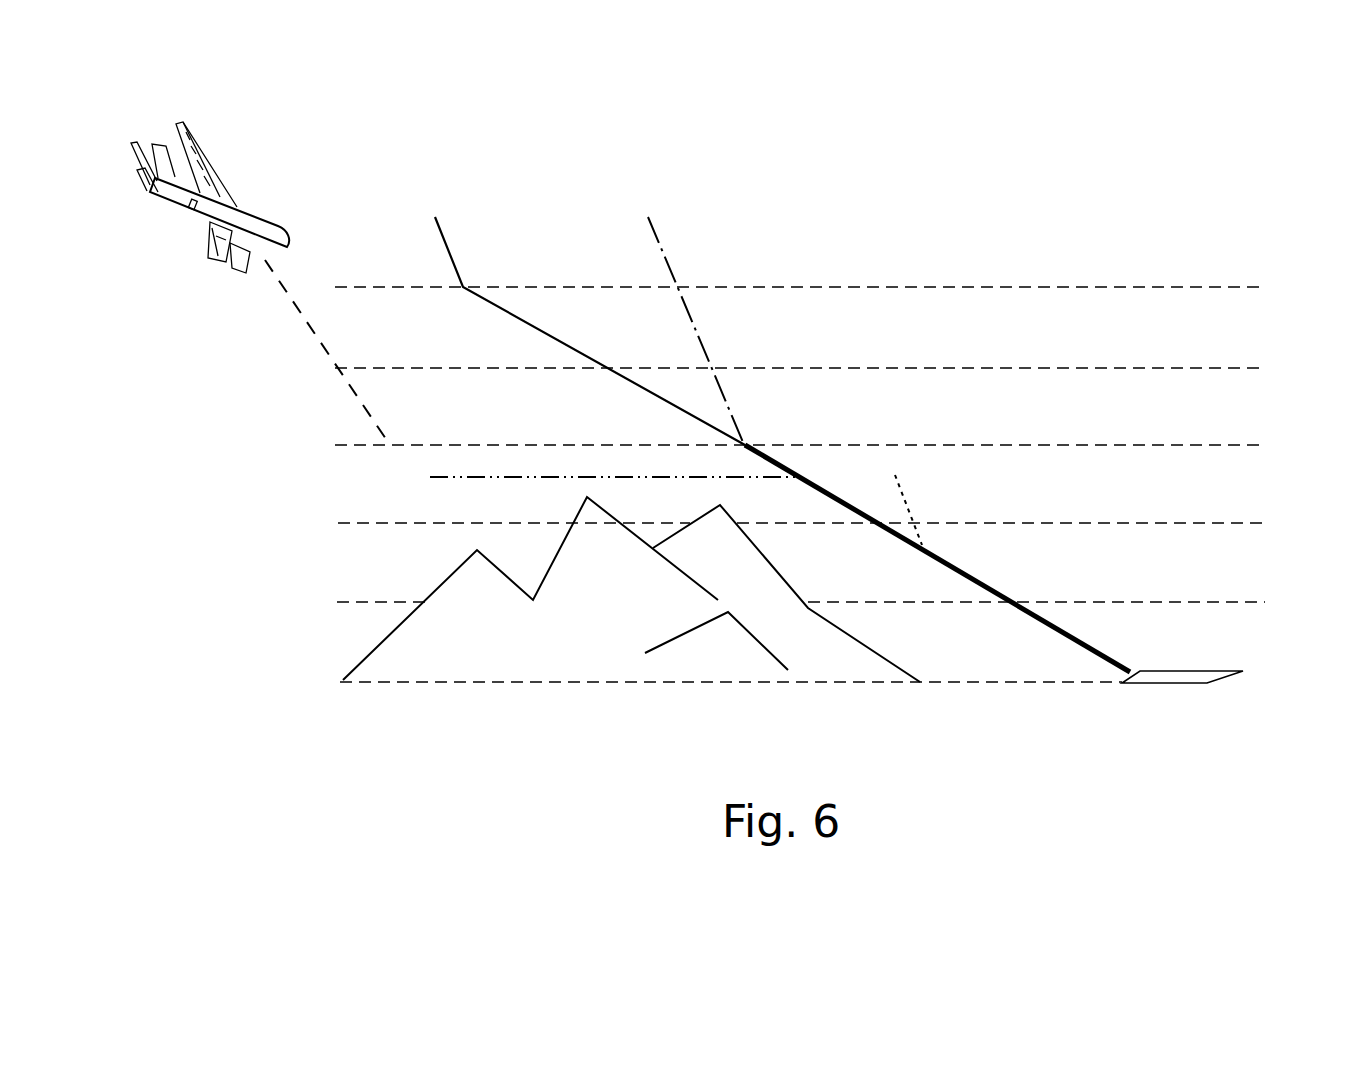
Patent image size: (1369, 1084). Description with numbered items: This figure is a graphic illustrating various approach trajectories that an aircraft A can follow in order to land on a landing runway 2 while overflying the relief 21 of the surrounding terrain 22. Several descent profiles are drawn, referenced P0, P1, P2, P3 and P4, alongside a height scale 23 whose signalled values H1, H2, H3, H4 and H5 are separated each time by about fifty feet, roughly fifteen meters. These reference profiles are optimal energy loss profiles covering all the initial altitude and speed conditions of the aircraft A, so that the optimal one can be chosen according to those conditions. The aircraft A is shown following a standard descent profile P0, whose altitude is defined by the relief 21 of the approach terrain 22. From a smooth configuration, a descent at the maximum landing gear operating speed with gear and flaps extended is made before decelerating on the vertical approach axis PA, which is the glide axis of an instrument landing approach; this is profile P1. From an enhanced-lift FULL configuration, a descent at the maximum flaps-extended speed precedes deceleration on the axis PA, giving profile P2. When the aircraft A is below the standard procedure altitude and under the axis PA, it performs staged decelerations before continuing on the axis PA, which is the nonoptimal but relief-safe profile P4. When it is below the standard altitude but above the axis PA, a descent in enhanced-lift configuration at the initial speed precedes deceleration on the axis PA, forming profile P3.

The aircraft A is at (200, 218).
The standard descent profile P0 is at (320, 338).
The first descent profile P1 is at (450, 248).
The second descent profile P2 is at (697, 333).
The third descent profile P3 is at (905, 493).
The fourth descent profile P4 is at (482, 478).
The vertical approach axis PA is at (1032, 630).
The height scale value H1 is at (824, 603).
The height scale value H2 is at (824, 525).
The height scale value H3 is at (823, 448).
The height scale value H4 is at (823, 370).
The height scale value H5 is at (823, 288).
The relief 21 is at (392, 636).
The terrain 22 is at (403, 640).
The landing runway 2 is at (1178, 677).
The height scale 23 is at (1287, 632).